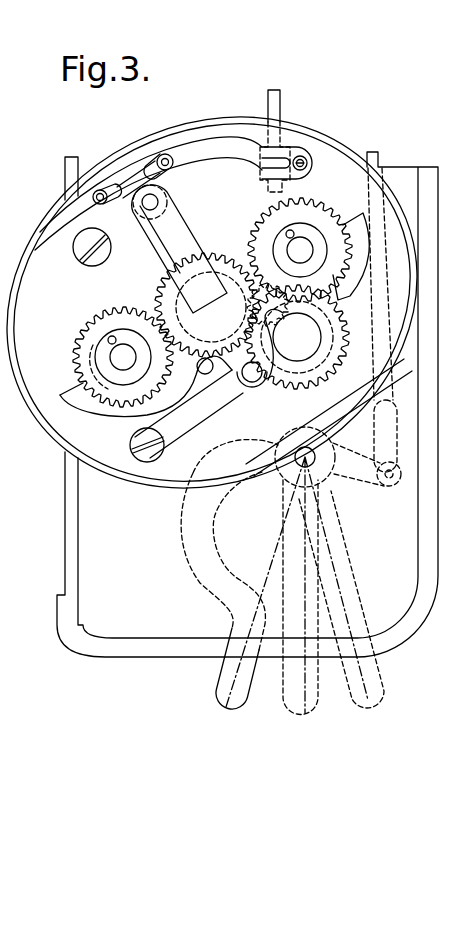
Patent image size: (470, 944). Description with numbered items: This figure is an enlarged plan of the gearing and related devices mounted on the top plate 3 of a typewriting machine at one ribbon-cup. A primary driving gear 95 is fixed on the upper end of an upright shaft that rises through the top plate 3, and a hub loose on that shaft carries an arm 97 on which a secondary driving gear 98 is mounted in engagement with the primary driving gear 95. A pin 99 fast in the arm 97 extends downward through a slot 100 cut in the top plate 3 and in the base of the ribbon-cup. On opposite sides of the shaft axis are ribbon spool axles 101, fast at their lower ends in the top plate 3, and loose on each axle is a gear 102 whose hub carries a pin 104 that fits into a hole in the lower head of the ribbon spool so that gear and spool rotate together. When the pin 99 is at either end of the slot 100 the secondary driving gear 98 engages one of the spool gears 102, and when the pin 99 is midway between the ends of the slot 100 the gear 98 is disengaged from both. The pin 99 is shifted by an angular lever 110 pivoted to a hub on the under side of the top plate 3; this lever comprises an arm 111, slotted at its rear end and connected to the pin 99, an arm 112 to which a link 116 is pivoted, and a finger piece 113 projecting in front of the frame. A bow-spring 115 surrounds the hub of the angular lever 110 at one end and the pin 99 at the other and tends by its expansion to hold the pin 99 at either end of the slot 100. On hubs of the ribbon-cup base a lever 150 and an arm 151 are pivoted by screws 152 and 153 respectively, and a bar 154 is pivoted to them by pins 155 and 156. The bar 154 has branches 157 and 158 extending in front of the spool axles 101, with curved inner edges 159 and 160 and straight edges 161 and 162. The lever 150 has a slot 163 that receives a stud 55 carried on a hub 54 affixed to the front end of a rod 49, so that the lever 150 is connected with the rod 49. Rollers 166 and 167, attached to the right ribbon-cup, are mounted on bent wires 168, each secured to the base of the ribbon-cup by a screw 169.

The top plate 3 is at (438, 352).
The rod 49 is at (268, 106).
The hub 54 is at (264, 164).
The stud 55 is at (304, 156).
The primary driving gear 95 is at (229, 257).
The arm 97 is at (205, 339).
The secondary driving gear 98 is at (334, 348).
The pin 99 is at (271, 355).
The slot 100 is at (207, 374).
The ribbon spool axles 101 is at (302, 246).
The gear 102 is at (270, 224).
The pin 104 is at (291, 231).
The angular lever 110 is at (194, 560).
The arm 111 is at (314, 410).
The arm 112 is at (352, 478).
The finger piece 113 is at (229, 692).
The bow-spring 115 is at (290, 481).
The link 116 is at (389, 404).
The lever 150 is at (229, 163).
The arm 151 is at (188, 428).
The screw 152 is at (88, 262).
The screw 153 is at (138, 452).
The bar 154 is at (162, 258).
The pin 155 is at (158, 202).
The pin 156 is at (253, 382).
The branch 157 is at (76, 405).
The branch 158 is at (362, 270).
The curved inner edge 159 is at (80, 368).
The curved inner edge 160 is at (340, 288).
The straight edge 161 is at (63, 394).
The straight edge 162 is at (344, 226).
The slot 163 is at (311, 164).
The roller 166 is at (163, 154).
The roller 167 is at (99, 190).
The wires 168 is at (122, 184).
The screw 169 is at (176, 212).